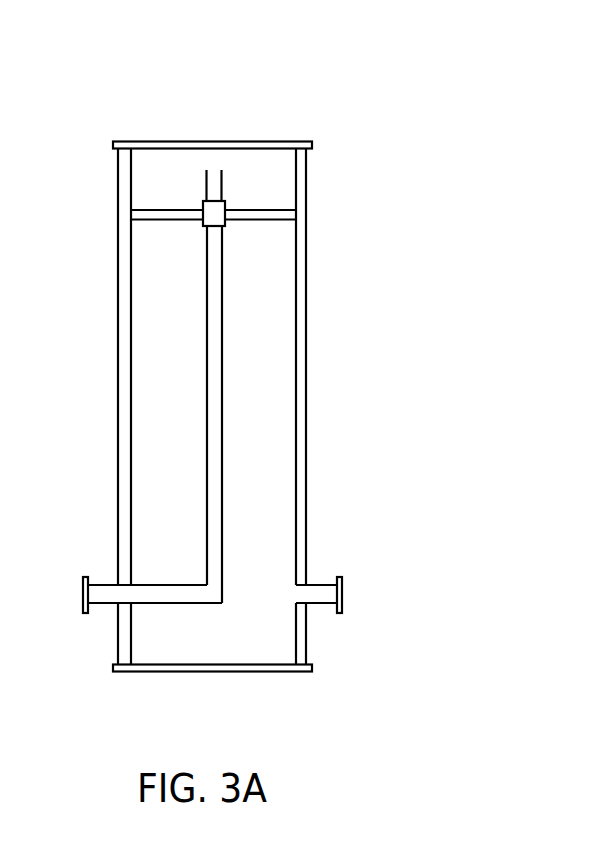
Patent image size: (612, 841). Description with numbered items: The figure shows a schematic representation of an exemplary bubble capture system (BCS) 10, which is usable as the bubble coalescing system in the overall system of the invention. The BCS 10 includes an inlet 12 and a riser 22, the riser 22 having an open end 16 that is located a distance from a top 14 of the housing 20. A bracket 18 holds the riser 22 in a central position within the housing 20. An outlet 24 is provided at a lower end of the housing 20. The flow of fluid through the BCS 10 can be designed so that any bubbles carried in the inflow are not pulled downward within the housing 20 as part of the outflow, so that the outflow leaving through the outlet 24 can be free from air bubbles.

The bubble capture system 10 is at (249, 377).
The inlet 12 is at (103, 607).
The top of the housing 14 is at (189, 124).
The open end 16 is at (213, 172).
The bracket 18 is at (158, 221).
The housing 20 is at (307, 258).
The riser 22 is at (222, 318).
The outlet 24 is at (320, 610).